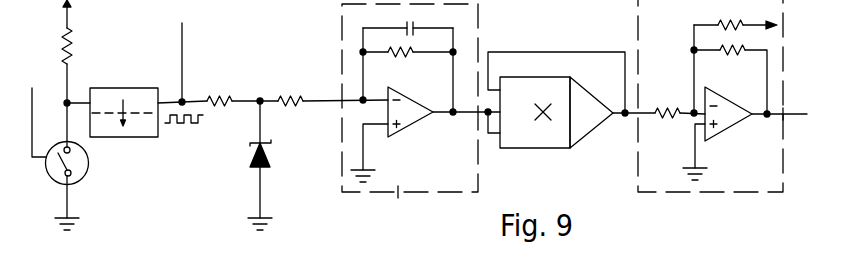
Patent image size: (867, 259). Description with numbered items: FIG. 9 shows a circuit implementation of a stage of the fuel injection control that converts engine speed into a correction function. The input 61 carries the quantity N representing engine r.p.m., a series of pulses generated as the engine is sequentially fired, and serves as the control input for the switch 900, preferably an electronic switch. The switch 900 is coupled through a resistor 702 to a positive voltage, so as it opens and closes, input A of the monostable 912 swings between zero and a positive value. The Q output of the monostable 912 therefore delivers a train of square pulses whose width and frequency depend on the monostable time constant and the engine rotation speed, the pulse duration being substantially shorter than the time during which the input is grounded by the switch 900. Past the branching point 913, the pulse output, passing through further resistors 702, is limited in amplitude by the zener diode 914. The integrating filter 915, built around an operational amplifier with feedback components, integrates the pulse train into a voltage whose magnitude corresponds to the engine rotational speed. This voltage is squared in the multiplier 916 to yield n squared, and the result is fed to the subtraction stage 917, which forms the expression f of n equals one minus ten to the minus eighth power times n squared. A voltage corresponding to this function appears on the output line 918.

The resistor 702 is at (74, 40).
The branching point 913 is at (182, 41).
The monostable 912 is at (137, 137).
The input 61 is at (33, 143).
The switch 900 is at (82, 171).
The zener diode 914 is at (270, 162).
The integrating filter 915 is at (415, 118).
The multiplier 916 is at (528, 148).
The subtraction stage 917 is at (648, 171).
The line 918 is at (797, 110).